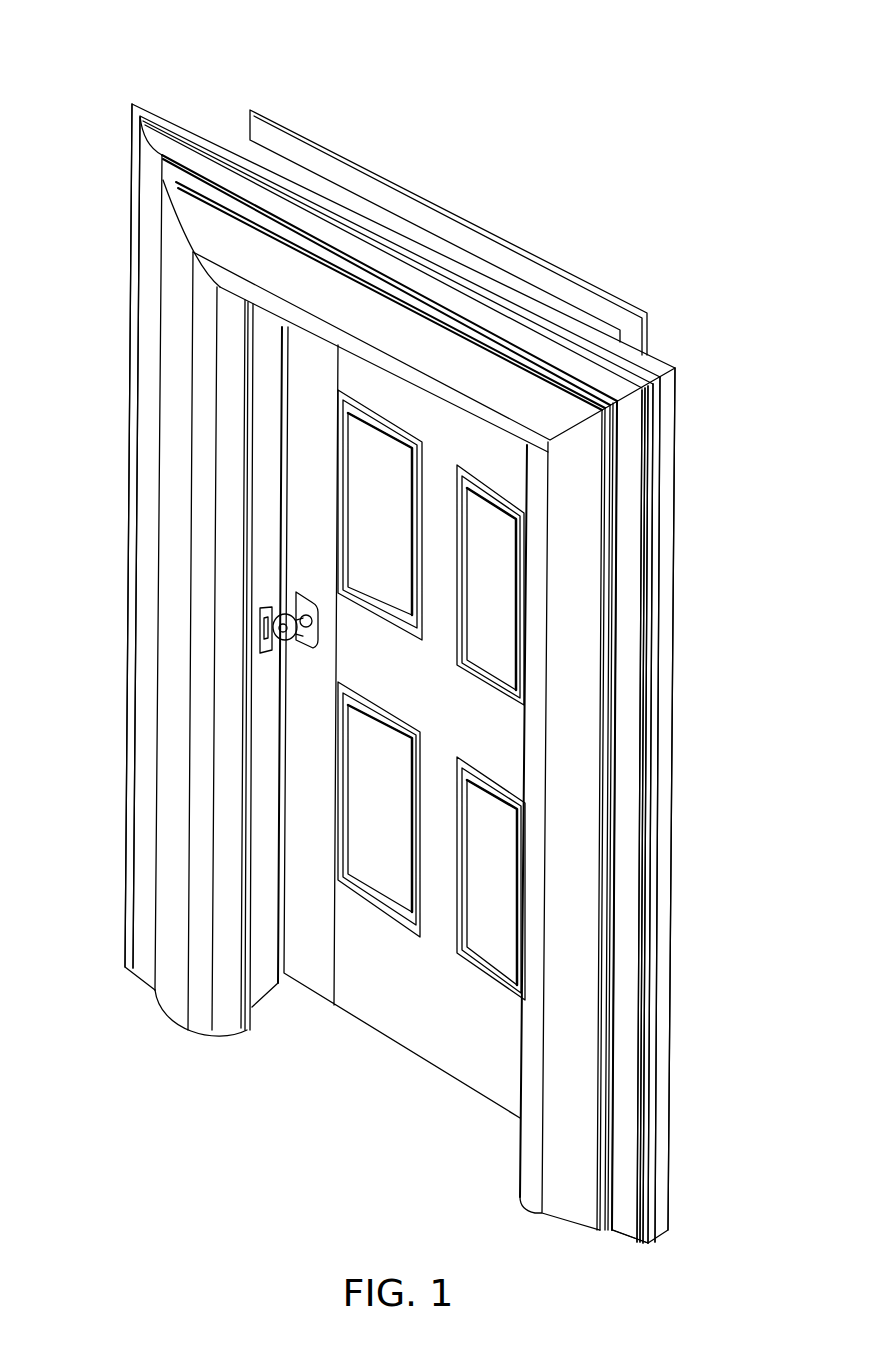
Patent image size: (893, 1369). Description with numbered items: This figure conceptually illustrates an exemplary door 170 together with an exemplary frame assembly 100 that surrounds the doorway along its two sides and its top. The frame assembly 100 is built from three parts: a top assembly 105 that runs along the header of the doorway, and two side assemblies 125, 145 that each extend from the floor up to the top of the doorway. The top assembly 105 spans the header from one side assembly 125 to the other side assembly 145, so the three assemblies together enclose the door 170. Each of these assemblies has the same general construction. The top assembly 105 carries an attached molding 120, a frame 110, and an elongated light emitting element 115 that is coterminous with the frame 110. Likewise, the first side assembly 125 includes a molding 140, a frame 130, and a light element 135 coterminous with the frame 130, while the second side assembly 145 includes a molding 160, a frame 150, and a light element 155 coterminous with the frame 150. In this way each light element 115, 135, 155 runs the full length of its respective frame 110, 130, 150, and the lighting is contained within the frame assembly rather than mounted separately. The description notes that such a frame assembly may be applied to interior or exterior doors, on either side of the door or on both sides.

The frame assembly 100 is at (455, 193).
The top assembly 105 is at (150, 88).
The frame 110 is at (186, 118).
The elongated light emitting element 115 is at (213, 165).
The molding 120 is at (567, 407).
The side assembly 125 is at (680, 500).
The frame 130 is at (668, 632).
The elongated light emitting element 135 is at (632, 700).
The molding 140 is at (543, 1215).
The side assembly 145 is at (115, 330).
The frame 150 is at (120, 516).
The elongated light emitting element 155 is at (148, 576).
The molding 160 is at (182, 1023).
The door 170 is at (420, 1003).